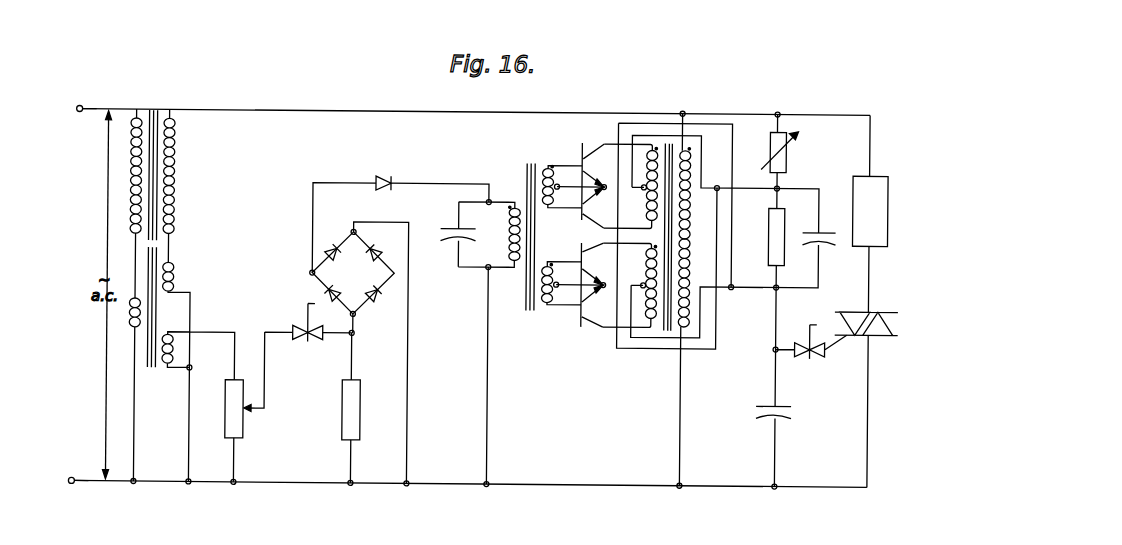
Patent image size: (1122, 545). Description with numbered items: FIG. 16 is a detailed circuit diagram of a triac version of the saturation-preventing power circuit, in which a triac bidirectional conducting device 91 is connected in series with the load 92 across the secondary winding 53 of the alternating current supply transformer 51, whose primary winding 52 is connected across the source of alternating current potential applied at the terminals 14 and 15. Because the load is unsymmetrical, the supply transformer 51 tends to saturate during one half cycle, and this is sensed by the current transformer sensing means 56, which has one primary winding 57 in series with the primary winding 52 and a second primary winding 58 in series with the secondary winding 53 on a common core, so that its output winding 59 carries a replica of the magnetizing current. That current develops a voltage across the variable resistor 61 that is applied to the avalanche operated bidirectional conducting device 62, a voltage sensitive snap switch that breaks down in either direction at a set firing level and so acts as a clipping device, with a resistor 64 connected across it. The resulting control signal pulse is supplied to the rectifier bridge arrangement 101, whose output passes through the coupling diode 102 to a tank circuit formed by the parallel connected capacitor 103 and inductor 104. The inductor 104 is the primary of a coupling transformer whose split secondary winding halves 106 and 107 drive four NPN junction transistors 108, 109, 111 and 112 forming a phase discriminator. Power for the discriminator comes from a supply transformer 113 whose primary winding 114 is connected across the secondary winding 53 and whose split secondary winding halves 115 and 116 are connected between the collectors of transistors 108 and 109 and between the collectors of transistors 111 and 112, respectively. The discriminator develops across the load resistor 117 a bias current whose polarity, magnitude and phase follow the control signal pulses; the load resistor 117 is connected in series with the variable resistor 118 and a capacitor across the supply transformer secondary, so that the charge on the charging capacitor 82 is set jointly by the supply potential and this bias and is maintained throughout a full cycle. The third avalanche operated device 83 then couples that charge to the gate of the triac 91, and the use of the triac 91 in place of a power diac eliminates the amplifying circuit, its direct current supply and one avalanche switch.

The AC input terminal 14 is at (93, 111).
The AC input terminal 15 is at (96, 485).
The alternating current supply transformer 51 is at (168, 100).
The primary winding 52 is at (128, 167).
The secondary winding 53 is at (178, 171).
The current transformer sensing means 56 is at (159, 397).
The primary winding 57 is at (128, 318).
The primary winding 58 is at (176, 266).
The output winding 59 is at (170, 334).
The variable resistor 61 is at (245, 428).
The avalanche operated conductivity controlled bidirectional conducting device 62 is at (314, 345).
The resistor 64 is at (344, 415).
The charging capacitor 82 is at (762, 401).
The third avalanche operated device 83 is at (816, 357).
The triac bidirectional conducting device 91 is at (887, 333).
The load 92 is at (875, 172).
The rectifier bridge arrangement 101 is at (370, 277).
The coupling diode 102 is at (389, 176).
The capacitor 103 is at (456, 227).
The inductor 104 is at (508, 229).
The split secondary winding half 106 is at (545, 166).
The split secondary winding half 107 is at (546, 307).
The NPN junction transistor 108 is at (581, 143).
The NPN junction transistor 109 is at (581, 221).
The NPN junction transistor 111 is at (581, 251).
The NPN junction transistor 112 is at (580, 328).
The supply transformer 113 is at (715, 224).
The primary winding 114 is at (690, 272).
The split secondary winding half 115 is at (645, 207).
The split secondary winding half 116 is at (645, 263).
The load resistor 117 is at (768, 246).
The variable resistor 118 is at (790, 154).